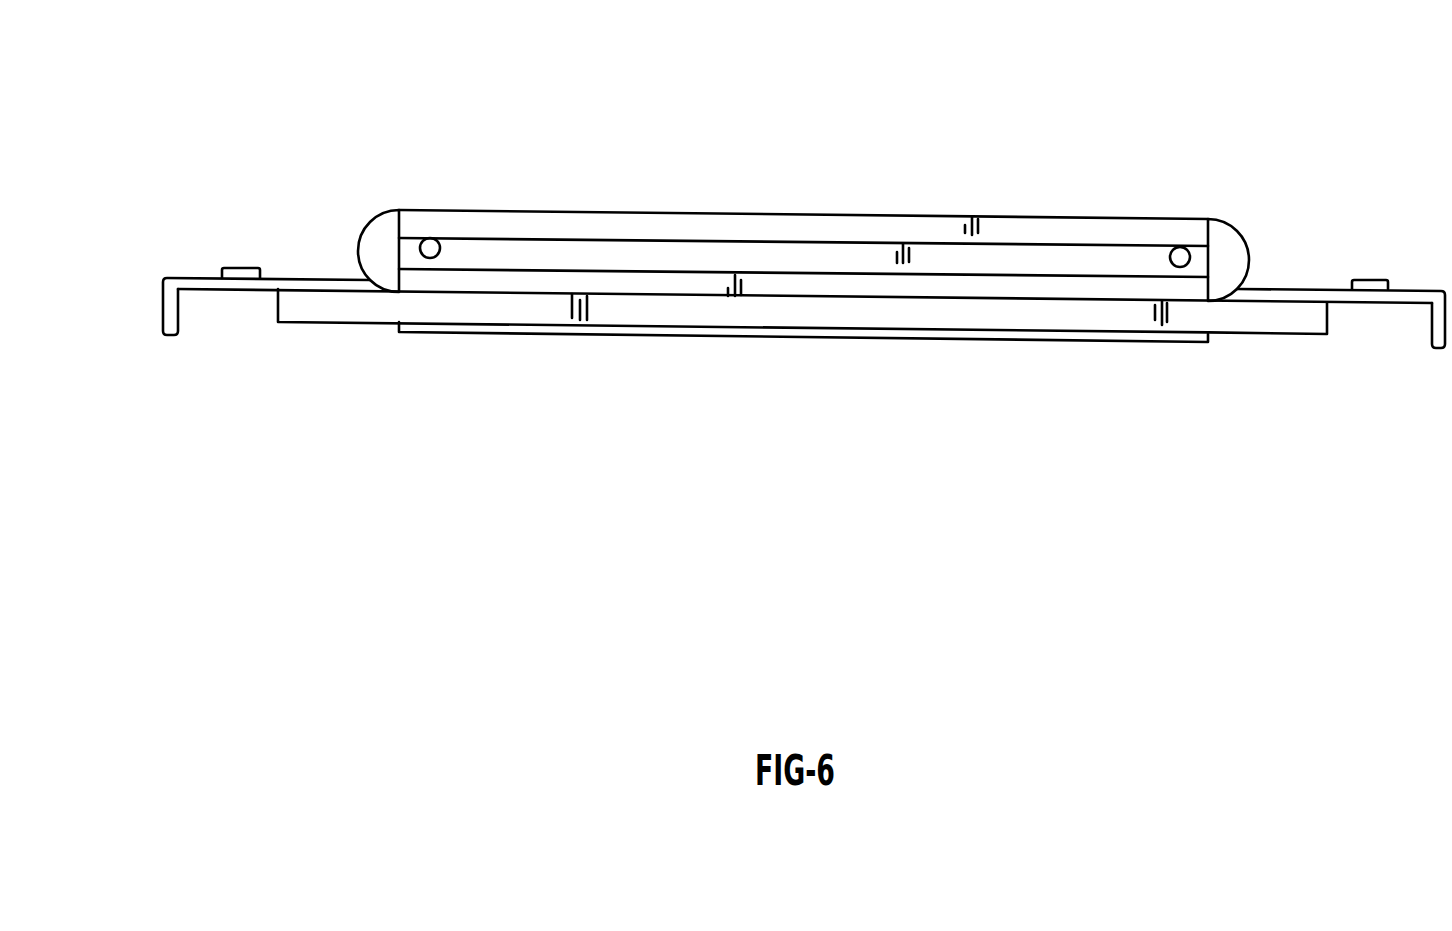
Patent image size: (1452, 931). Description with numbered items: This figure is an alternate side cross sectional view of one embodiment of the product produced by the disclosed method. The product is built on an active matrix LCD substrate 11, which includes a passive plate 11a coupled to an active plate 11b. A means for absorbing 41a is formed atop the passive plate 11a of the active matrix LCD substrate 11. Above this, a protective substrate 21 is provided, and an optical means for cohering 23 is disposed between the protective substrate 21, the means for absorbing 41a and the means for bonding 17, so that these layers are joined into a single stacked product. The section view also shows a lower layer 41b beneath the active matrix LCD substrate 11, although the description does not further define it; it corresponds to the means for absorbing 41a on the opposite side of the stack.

The active matrix LCD substrate 11 is at (791, 274).
The passive plate 11a is at (1077, 290).
The active plate 11b is at (1250, 322).
The means for bonding 17 is at (428, 242).
The protective substrate 21 is at (1188, 228).
The optical means for cohering 23 is at (488, 247).
The means for absorbing 41a is at (1002, 273).
The lower layer 41b is at (967, 330).